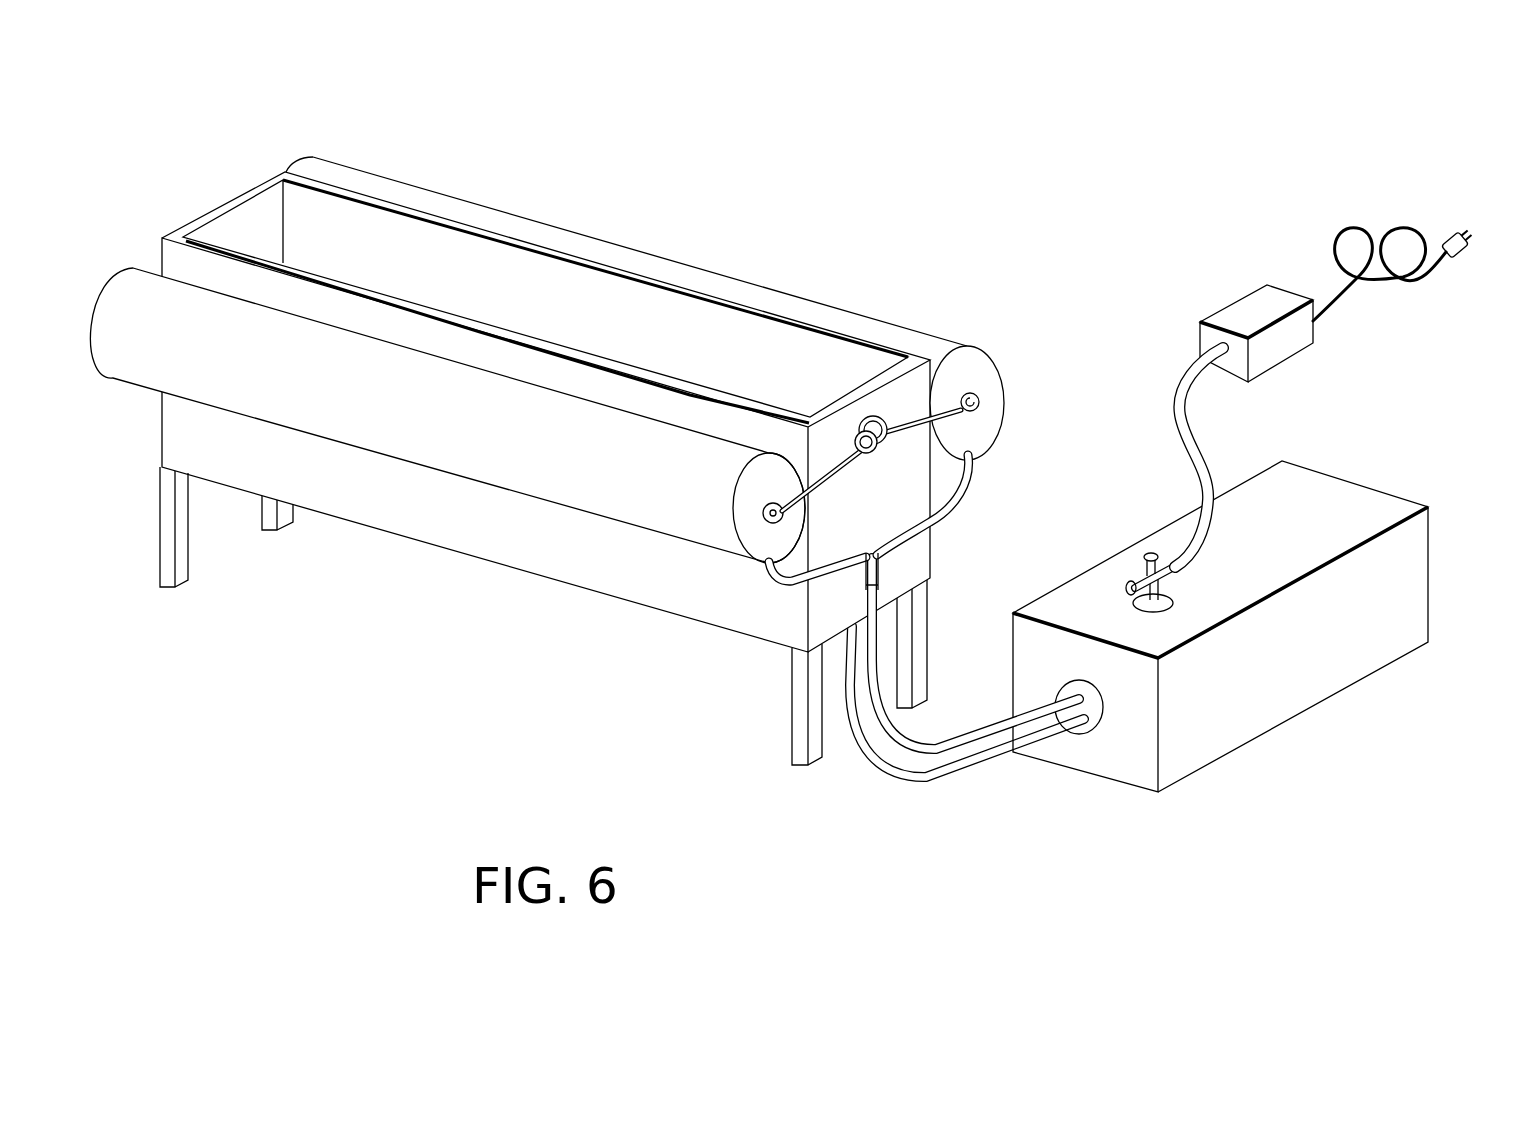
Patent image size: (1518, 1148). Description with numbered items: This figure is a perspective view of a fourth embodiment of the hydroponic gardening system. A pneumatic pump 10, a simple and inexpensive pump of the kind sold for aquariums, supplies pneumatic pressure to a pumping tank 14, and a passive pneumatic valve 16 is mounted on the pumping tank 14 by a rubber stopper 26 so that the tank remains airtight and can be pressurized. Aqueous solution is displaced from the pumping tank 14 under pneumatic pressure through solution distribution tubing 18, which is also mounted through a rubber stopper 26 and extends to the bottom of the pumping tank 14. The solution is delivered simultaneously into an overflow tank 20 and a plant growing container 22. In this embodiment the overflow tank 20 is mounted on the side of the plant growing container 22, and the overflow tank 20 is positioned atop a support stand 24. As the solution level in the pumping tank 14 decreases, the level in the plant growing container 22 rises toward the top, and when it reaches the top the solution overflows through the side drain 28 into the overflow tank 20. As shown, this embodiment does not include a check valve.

The pneumatic pump 10 is at (1248, 310).
The pumping tank 14 is at (1245, 725).
The passive pneumatic valve 16 is at (1145, 578).
The solution distribution tubing 18 is at (967, 702).
The overflow tank 20 is at (978, 368).
The plant growing container 22 is at (222, 204).
The support stand 24 is at (185, 553).
The rubber stopper 26 is at (1085, 727).
The side drain 28 is at (866, 424).